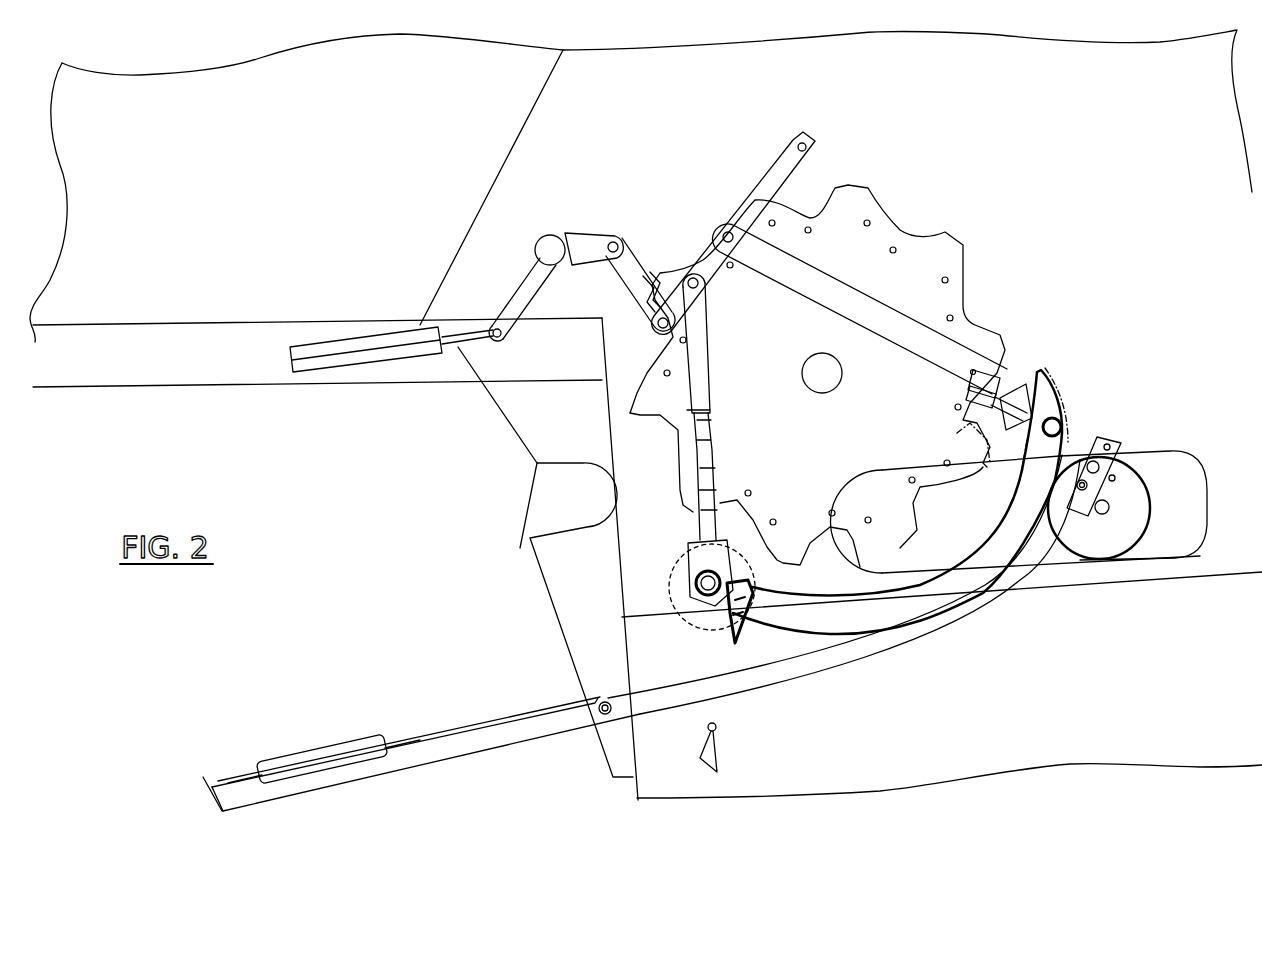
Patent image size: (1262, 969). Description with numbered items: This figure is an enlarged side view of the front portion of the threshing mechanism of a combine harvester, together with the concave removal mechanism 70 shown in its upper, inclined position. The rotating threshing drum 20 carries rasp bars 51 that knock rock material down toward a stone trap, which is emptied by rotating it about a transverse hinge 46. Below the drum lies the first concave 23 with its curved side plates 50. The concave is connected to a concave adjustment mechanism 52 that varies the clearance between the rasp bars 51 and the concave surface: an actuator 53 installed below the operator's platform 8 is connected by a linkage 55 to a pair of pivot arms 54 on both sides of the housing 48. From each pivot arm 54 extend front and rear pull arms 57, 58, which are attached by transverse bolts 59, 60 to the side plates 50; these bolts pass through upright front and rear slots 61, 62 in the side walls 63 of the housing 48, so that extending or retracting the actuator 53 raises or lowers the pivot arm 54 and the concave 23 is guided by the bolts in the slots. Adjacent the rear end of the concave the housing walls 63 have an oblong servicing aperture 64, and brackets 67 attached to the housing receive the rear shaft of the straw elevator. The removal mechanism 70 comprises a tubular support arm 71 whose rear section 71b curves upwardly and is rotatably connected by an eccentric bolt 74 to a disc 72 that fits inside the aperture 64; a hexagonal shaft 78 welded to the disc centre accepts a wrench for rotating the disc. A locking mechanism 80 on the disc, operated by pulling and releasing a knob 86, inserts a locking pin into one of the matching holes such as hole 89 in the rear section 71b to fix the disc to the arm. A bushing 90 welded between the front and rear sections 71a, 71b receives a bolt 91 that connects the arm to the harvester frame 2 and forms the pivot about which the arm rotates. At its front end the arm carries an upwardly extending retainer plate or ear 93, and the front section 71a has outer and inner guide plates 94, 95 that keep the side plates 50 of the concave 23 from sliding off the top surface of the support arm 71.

The harvester frame 2 is at (1176, 731).
The operator's platform 8 is at (130, 378).
The threshing drum 20 is at (955, 266).
The first concave 23 is at (805, 640).
The transverse hinge 46 is at (722, 728).
The housing 48 is at (486, 445).
The curved side plates 50 is at (888, 650).
The rasp bars 51 is at (840, 180).
The concave adjustment mechanism 52 is at (760, 321).
The actuator 53 is at (333, 363).
The pivot arms 54 is at (768, 165).
The linkage 55 is at (560, 240).
The front pull arm 57 is at (713, 386).
The rear pull arm 58 is at (833, 305).
The front bolt 59 is at (680, 583).
The rear bolt 60 is at (1062, 426).
The front slot 61 is at (686, 568).
The rear slot 62 is at (1060, 385).
The side walls 63 is at (1112, 274).
The oblong servicing aperture 64 is at (1164, 514).
The brackets 67 is at (518, 548).
The concave removal mechanism 70 is at (386, 713).
The tubular support arm 71 is at (512, 737).
The front section of the support arm 71a is at (350, 776).
The rear section of the support arm 71b is at (943, 632).
The disc 72 is at (1125, 540).
The bolt 74 is at (1160, 460).
The hexagonal shaft 78 is at (1095, 515).
The locking mechanism 80 is at (1147, 506).
The knob 86 is at (1168, 472).
The locking hole 89 is at (1108, 445).
The bushing 90 is at (603, 716).
The bolt 91 is at (609, 718).
The front retainer plate or ear 93 is at (207, 793).
The outer guide plate 94 is at (305, 757).
The inner guide plate 95 is at (237, 775).